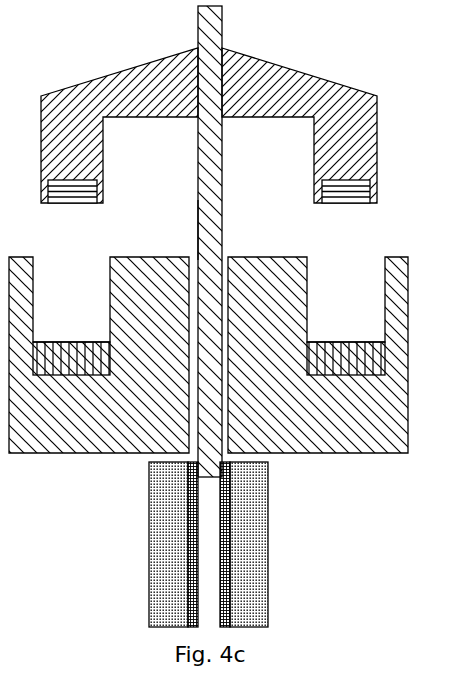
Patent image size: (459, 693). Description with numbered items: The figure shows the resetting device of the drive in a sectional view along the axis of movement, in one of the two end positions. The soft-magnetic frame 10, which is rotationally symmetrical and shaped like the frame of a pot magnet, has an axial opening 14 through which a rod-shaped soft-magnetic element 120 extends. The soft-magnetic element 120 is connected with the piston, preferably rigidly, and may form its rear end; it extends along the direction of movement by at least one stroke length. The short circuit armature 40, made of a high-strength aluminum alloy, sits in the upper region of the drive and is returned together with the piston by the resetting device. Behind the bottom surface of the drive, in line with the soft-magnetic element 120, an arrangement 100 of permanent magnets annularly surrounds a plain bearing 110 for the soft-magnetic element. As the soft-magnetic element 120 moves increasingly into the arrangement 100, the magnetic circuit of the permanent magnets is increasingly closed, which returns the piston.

The soft-magnetic frame 10 is at (112, 423).
The axial opening 14 is at (222, 277).
The short circuit armature 40 is at (258, 73).
The arrangement of permanent magnets 100 is at (289, 544).
The plain bearing 110 is at (227, 545).
The soft-magnetic element 120 is at (198, 231).